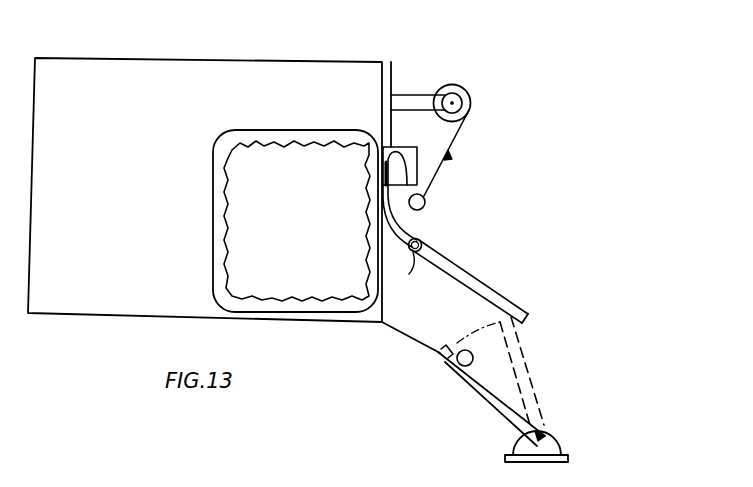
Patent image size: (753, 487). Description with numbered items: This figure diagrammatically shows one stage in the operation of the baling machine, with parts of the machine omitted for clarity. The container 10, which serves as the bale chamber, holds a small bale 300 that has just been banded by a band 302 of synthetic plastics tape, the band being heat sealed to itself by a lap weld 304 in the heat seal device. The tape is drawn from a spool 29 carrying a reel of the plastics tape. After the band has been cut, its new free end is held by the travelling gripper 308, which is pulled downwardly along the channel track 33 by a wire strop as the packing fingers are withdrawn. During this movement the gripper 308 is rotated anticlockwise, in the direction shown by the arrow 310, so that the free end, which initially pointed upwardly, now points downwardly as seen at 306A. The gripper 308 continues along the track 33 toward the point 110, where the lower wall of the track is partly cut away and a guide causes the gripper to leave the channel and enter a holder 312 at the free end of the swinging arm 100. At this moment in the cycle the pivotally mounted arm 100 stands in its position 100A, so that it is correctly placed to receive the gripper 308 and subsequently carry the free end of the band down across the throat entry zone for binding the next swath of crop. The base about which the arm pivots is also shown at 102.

The container 10 is at (247, 62).
The spool 29 is at (463, 90).
The channel track 33 is at (438, 258).
The swinging arm 100 is at (500, 404).
The arm position 100A is at (530, 378).
The pivot base 102 is at (548, 433).
The point 110 is at (526, 315).
The small bale 300 is at (328, 225).
The band 302 is at (240, 135).
The lap weld 304 is at (374, 151).
The free end of band 306A is at (463, 271).
The travelling gripper 308 is at (421, 242).
The arrow 310 is at (405, 256).
The holder 312 is at (461, 368).